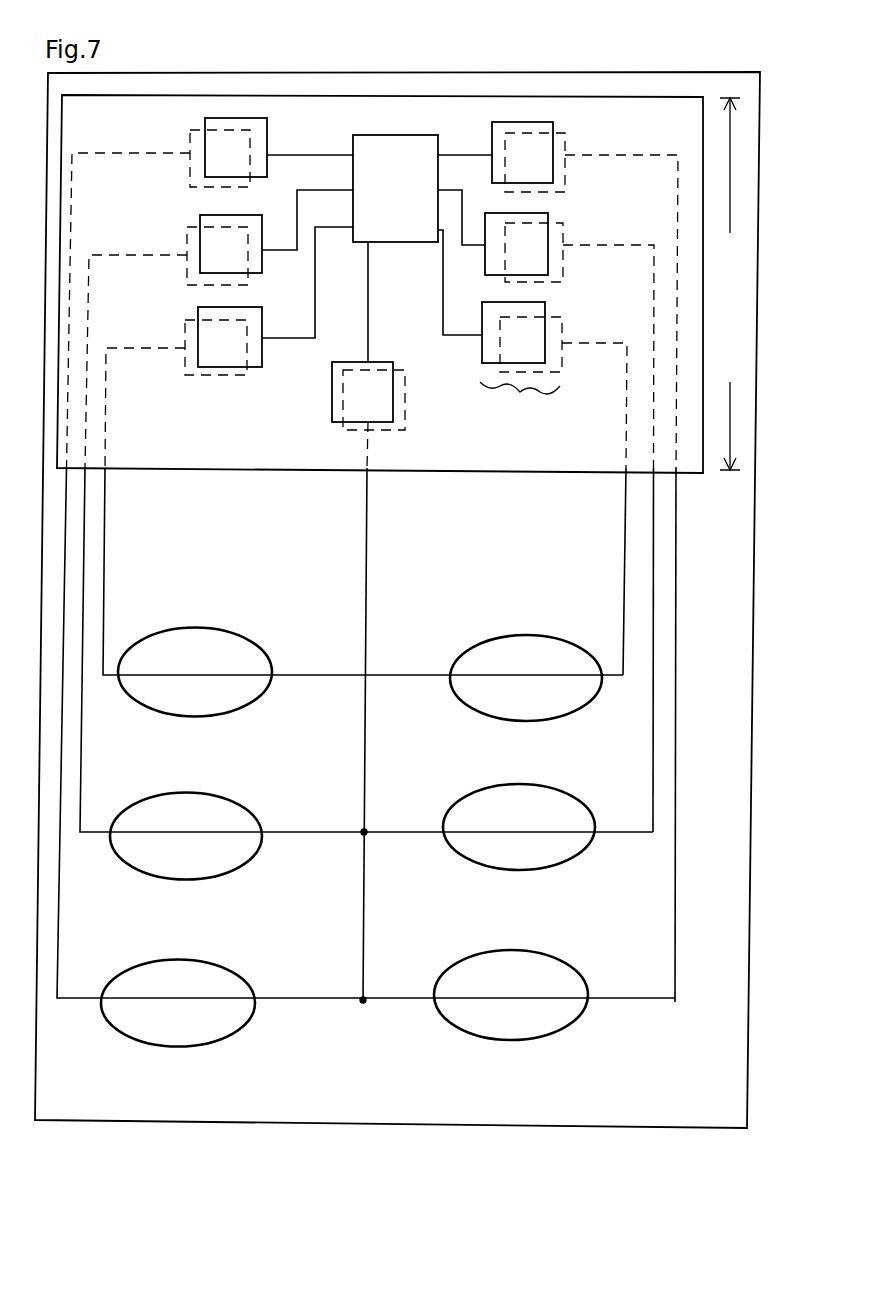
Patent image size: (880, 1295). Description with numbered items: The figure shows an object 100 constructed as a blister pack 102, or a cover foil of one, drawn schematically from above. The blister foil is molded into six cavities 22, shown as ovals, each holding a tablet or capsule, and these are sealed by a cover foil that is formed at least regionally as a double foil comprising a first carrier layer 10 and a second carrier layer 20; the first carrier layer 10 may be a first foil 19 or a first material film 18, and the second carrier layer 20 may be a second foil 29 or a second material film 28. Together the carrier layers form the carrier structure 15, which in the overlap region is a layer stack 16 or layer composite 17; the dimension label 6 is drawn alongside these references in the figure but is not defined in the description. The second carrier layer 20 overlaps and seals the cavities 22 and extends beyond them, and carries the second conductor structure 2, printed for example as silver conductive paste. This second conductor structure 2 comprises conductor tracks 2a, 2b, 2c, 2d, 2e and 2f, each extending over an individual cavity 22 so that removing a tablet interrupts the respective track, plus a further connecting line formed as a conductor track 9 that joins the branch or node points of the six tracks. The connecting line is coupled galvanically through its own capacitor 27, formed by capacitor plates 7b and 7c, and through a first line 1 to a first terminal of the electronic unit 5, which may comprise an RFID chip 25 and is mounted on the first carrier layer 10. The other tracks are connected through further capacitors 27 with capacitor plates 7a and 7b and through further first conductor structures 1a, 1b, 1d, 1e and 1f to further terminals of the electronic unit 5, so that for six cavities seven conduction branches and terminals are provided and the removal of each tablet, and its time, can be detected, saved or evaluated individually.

The object 100 is at (397, 600).
The blister pack 102 is at (397, 600).
The second carrier layer 20 is at (397, 600).
The second material film 28 is at (397, 600).
The second foil 29 is at (403, 60).
The first carrier layer 10 is at (380, 314).
The first material film 18 is at (380, 314).
The first foil 19 is at (444, 463).
The length 6 is at (730, 284).
The carrier structure 15 is at (730, 284).
The layer stack 16 is at (730, 284).
The layer composite 17 is at (730, 284).
The electronic unit 5 is at (395, 188).
The RFID chip 25 is at (395, 188).
The first conductor structure 1 is at (404, 302).
The conductor track 9 is at (441, 271).
The first conductor structure 1a is at (465, 340).
The first conductor structure 1b is at (462, 212).
The first conductor structure 1d is at (315, 302).
The first conductor structure 1e is at (468, 155).
The first conductor structure 1f is at (300, 150).
The capacitor plate 7a is at (190, 277).
The capacitor plate 7b is at (268, 165).
The capacitor plate 7c is at (400, 397).
The capacitor 27 is at (217, 250).
The second conductor structure 2 is at (73, 210).
The second conductor track 2a is at (627, 415).
The second conductor track 2b is at (652, 298).
The second conductor track 2c is at (678, 185).
The second conductor track 2d is at (107, 425).
The second conductor track 2e is at (89, 320).
The second conductor track 2f is at (366, 575).
The cavity 22 is at (238, 862).